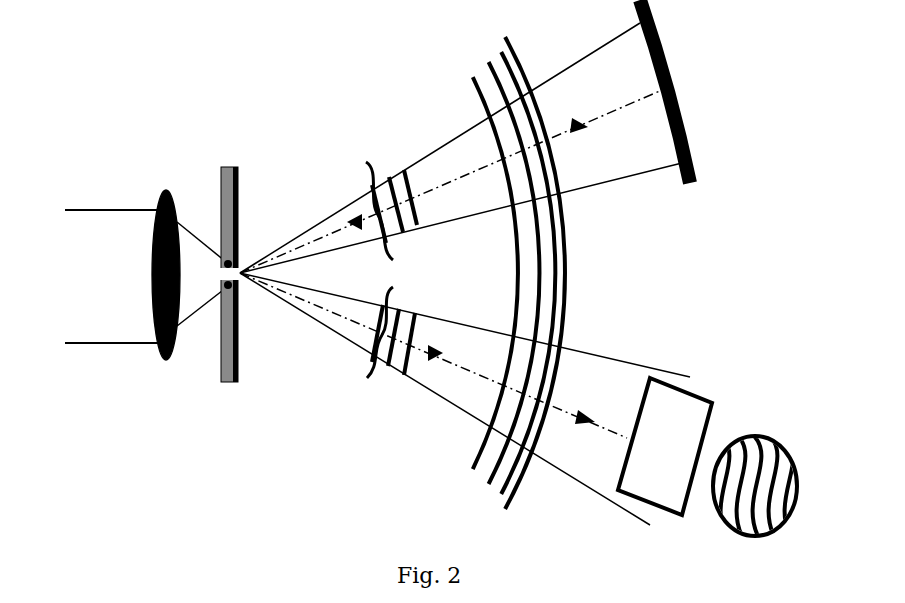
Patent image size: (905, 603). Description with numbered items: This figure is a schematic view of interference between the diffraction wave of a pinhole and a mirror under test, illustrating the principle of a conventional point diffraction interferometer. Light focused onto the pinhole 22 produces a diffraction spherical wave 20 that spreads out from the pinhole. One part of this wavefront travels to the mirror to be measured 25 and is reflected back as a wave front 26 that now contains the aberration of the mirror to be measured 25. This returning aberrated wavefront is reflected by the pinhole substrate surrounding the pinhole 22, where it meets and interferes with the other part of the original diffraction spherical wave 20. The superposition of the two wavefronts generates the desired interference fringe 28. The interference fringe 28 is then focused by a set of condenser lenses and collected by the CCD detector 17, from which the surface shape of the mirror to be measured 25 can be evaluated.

The CCD detector 17 is at (674, 455).
The diffraction spherical wave 20 is at (518, 273).
The pinhole 22 is at (206, 334).
The mirror to be measured 25 is at (691, 135).
The wave front containing an aberration of the mirror to be measured 26 is at (339, 138).
The interference fringe 28 is at (352, 417).